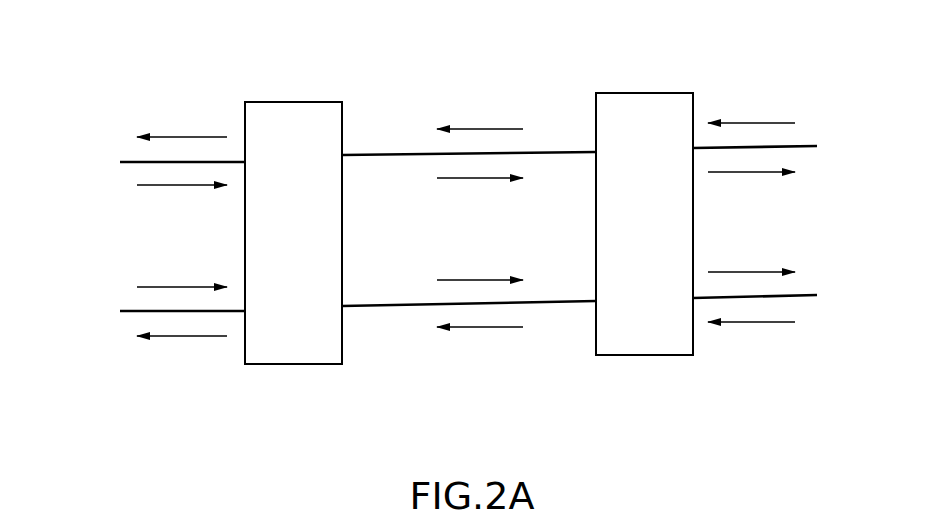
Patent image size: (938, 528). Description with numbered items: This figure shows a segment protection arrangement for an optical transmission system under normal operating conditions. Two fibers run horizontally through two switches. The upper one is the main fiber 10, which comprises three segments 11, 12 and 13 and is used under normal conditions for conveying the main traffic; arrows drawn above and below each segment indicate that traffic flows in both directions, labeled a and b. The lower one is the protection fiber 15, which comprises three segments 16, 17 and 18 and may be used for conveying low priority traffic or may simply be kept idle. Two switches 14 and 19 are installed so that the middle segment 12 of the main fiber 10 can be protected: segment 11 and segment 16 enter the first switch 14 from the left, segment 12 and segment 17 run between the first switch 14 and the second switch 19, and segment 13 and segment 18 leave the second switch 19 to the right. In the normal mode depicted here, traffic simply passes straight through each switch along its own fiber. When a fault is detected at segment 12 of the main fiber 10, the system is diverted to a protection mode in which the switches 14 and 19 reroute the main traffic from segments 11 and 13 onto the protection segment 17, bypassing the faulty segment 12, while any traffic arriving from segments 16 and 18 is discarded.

The main fiber 10 is at (399, 130).
The segment 11 is at (128, 160).
The segment 12 is at (563, 151).
The segment 13 is at (808, 143).
The switch 14 is at (310, 101).
The protection fiber 15 is at (400, 330).
The segment 16 is at (130, 310).
The segment 17 is at (563, 300).
The segment 18 is at (808, 293).
The switch 19 is at (661, 93).